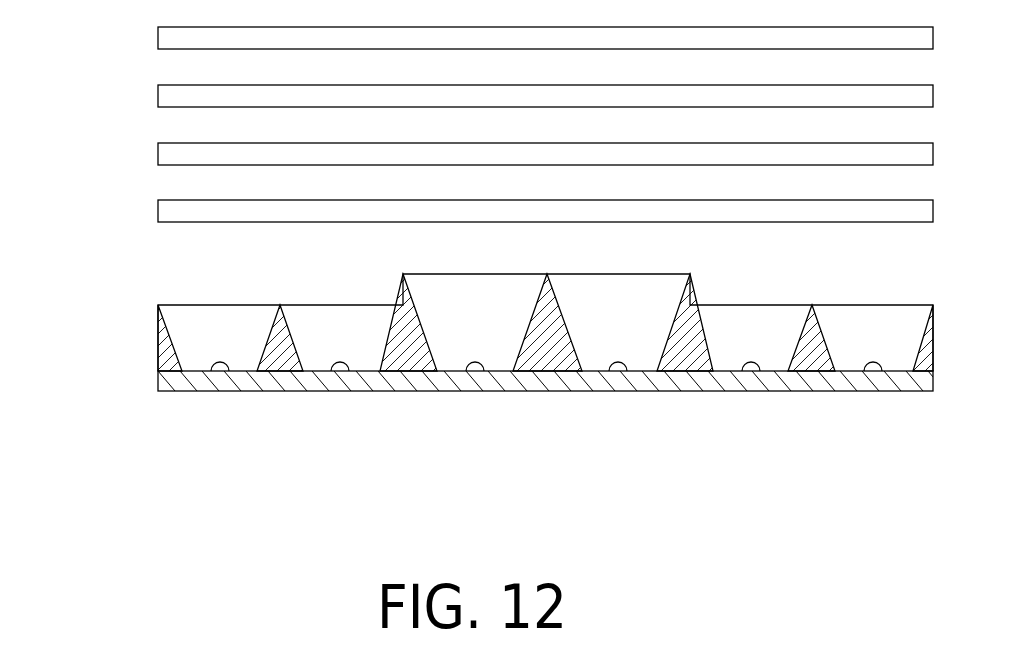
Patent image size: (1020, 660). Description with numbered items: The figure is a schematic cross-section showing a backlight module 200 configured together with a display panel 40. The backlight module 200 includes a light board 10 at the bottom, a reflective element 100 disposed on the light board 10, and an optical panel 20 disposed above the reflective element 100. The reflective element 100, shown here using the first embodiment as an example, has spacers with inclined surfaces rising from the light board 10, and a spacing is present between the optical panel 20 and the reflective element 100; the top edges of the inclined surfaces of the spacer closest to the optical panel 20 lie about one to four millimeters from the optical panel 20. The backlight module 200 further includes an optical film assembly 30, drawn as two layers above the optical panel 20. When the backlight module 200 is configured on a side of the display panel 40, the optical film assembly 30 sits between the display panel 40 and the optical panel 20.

The light board 10 is at (336, 392).
The reflective element 100 is at (242, 305).
The optical panel 20 is at (163, 212).
The optical film assembly 30 is at (150, 85).
The display panel 40 is at (163, 40).
The backlight module 200 is at (86, 85).